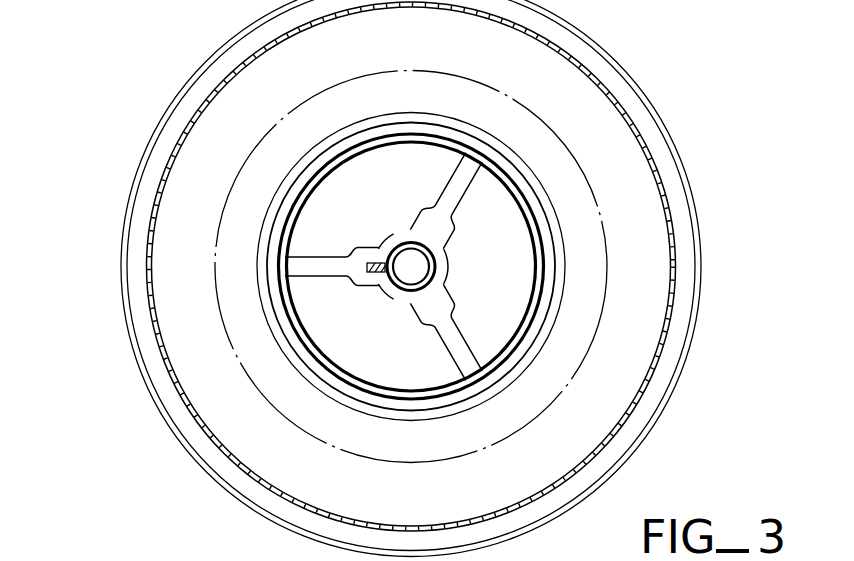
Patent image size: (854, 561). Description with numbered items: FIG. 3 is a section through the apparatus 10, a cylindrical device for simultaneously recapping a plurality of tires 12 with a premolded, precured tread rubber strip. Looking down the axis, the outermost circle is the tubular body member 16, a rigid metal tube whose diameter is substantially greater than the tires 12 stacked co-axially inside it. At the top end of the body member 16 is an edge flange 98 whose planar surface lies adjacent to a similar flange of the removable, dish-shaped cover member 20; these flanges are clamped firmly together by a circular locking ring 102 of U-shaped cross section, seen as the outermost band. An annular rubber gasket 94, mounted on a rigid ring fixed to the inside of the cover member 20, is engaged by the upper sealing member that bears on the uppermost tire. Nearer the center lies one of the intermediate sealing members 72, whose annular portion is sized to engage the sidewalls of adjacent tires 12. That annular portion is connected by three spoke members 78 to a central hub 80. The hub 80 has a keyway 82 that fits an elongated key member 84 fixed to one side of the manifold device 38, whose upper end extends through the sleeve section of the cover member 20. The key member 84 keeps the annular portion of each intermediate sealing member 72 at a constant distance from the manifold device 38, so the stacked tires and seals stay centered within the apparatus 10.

The apparatus 10 is at (702, 116).
The tires 12 is at (557, 395).
The tubular body member 16 is at (673, 288).
The cover member 20 is at (424, 498).
The manifold device 38 is at (436, 268).
The intermediate sealing members 72 is at (466, 342).
The spoke members 78 is at (303, 265).
The hub 80 is at (407, 299).
The keyway 82 is at (378, 262).
The key member 84 is at (372, 274).
The annular rubber gasket 94 is at (427, 111).
The edge flange 98 is at (137, 311).
The circular locking ring 102 is at (121, 239).